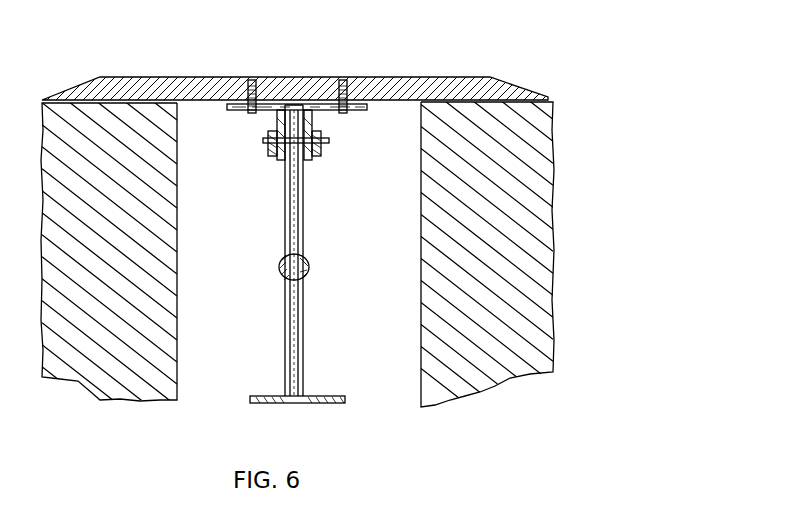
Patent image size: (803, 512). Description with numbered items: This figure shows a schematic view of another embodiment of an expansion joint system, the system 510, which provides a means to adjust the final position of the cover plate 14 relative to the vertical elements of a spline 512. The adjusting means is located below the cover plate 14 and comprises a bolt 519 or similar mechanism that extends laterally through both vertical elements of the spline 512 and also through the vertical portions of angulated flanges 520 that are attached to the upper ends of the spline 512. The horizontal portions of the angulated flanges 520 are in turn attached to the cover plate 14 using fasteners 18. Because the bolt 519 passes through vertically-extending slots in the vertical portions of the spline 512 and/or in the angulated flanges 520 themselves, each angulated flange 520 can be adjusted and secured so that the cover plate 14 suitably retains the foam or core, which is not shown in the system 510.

The system 510 is at (656, 198).
The cover plate 14 is at (438, 77).
The fasteners 18 is at (349, 80).
The angulated flanges 520 is at (228, 110).
The bolt 519 is at (329, 141).
The spline 512 is at (282, 353).